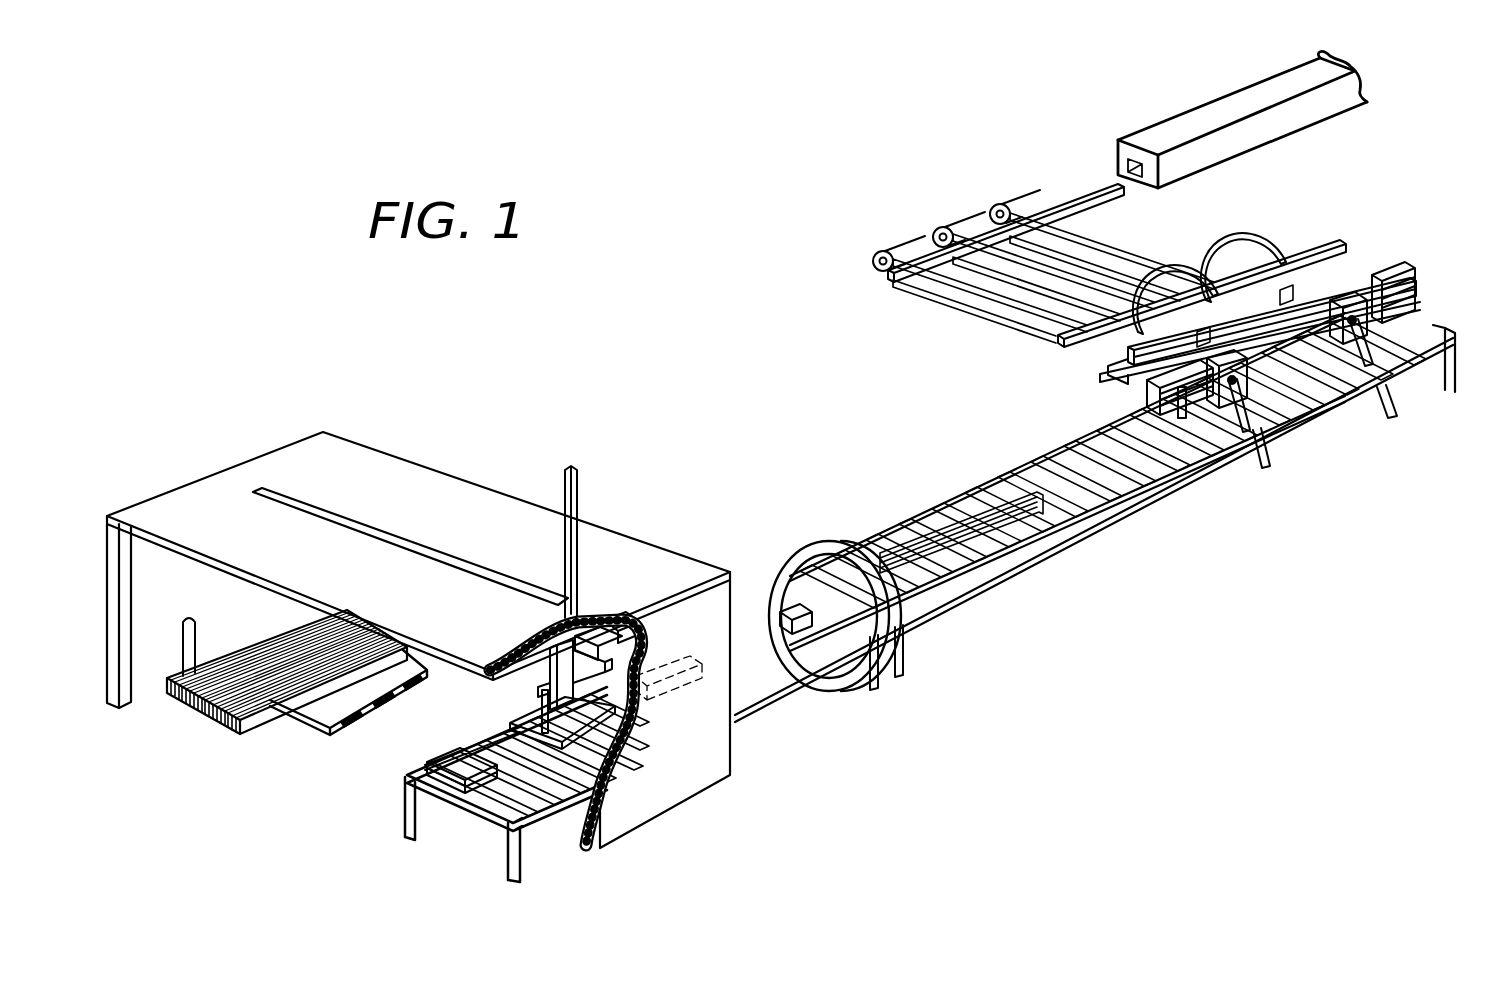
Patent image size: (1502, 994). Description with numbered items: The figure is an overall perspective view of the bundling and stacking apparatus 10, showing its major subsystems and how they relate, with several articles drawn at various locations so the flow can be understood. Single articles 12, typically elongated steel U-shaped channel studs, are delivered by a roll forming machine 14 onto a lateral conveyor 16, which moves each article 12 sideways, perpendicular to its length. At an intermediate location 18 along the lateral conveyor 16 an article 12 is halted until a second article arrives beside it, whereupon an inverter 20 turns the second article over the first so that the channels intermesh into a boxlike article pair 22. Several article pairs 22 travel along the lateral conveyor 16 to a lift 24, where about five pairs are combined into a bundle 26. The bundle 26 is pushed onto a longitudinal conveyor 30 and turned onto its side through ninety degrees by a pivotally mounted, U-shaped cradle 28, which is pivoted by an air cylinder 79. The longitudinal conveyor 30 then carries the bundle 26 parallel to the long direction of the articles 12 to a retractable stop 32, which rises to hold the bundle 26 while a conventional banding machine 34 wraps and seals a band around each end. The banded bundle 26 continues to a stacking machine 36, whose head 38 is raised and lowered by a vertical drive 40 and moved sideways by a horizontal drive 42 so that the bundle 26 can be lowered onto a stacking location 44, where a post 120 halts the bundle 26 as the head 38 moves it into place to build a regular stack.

The bundling and stacking apparatus 10 is at (1262, 705).
The article 12 is at (1056, 205).
The forming machine 14 is at (1300, 118).
The lateral conveyor 16 is at (952, 303).
The intermediate location 18 is at (1126, 369).
The inverter 20 is at (1213, 252).
The article pair 22 is at (1398, 234).
The lift 24 is at (1142, 393).
The bundle 26 is at (955, 560).
The cradle 28 is at (1380, 330).
The longitudinal conveyor 30 is at (1038, 456).
The retractable stop 32 is at (800, 632).
The banding machine 34 is at (822, 542).
The stacking machine 36 is at (500, 490).
The head 38 is at (538, 717).
The vertical drive 40 is at (592, 625).
The horizontal drive 42 is at (628, 624).
The stacking location 44 is at (320, 712).
The air cylinder 79 is at (1264, 470).
The post 120 is at (195, 640).